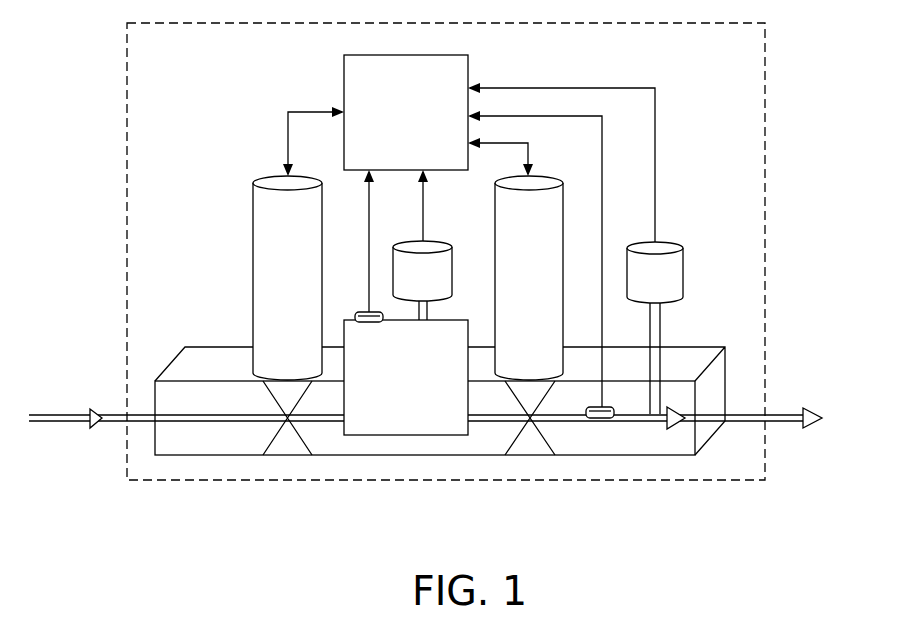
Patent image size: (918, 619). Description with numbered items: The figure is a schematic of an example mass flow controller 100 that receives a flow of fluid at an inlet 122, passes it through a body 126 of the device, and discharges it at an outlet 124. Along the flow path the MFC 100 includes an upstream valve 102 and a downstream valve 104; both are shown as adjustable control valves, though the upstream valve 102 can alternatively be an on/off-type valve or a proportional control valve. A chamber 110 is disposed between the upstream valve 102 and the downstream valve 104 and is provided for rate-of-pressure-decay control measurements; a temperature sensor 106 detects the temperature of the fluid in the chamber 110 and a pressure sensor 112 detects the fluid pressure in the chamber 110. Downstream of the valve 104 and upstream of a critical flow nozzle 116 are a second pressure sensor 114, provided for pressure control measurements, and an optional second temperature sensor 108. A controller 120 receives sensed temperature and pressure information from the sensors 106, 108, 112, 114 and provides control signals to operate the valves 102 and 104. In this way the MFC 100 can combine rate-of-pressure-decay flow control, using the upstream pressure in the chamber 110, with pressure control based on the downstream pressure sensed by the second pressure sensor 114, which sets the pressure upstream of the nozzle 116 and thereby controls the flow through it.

The mass flow controller 100 is at (766, 183).
The upstream valve 102 is at (308, 282).
The downstream valve 104 is at (550, 282).
The temperature sensor 106 is at (362, 312).
The second temperature sensor 108 is at (598, 421).
The chamber 110 is at (427, 391).
The pressure sensor 112 is at (444, 286).
The second pressure sensor 114 is at (676, 286).
The critical flow nozzle 116 is at (678, 426).
The controller 120 is at (427, 124).
The inlet 122 is at (100, 402).
The outlet 124 is at (780, 402).
The body 126 is at (152, 433).